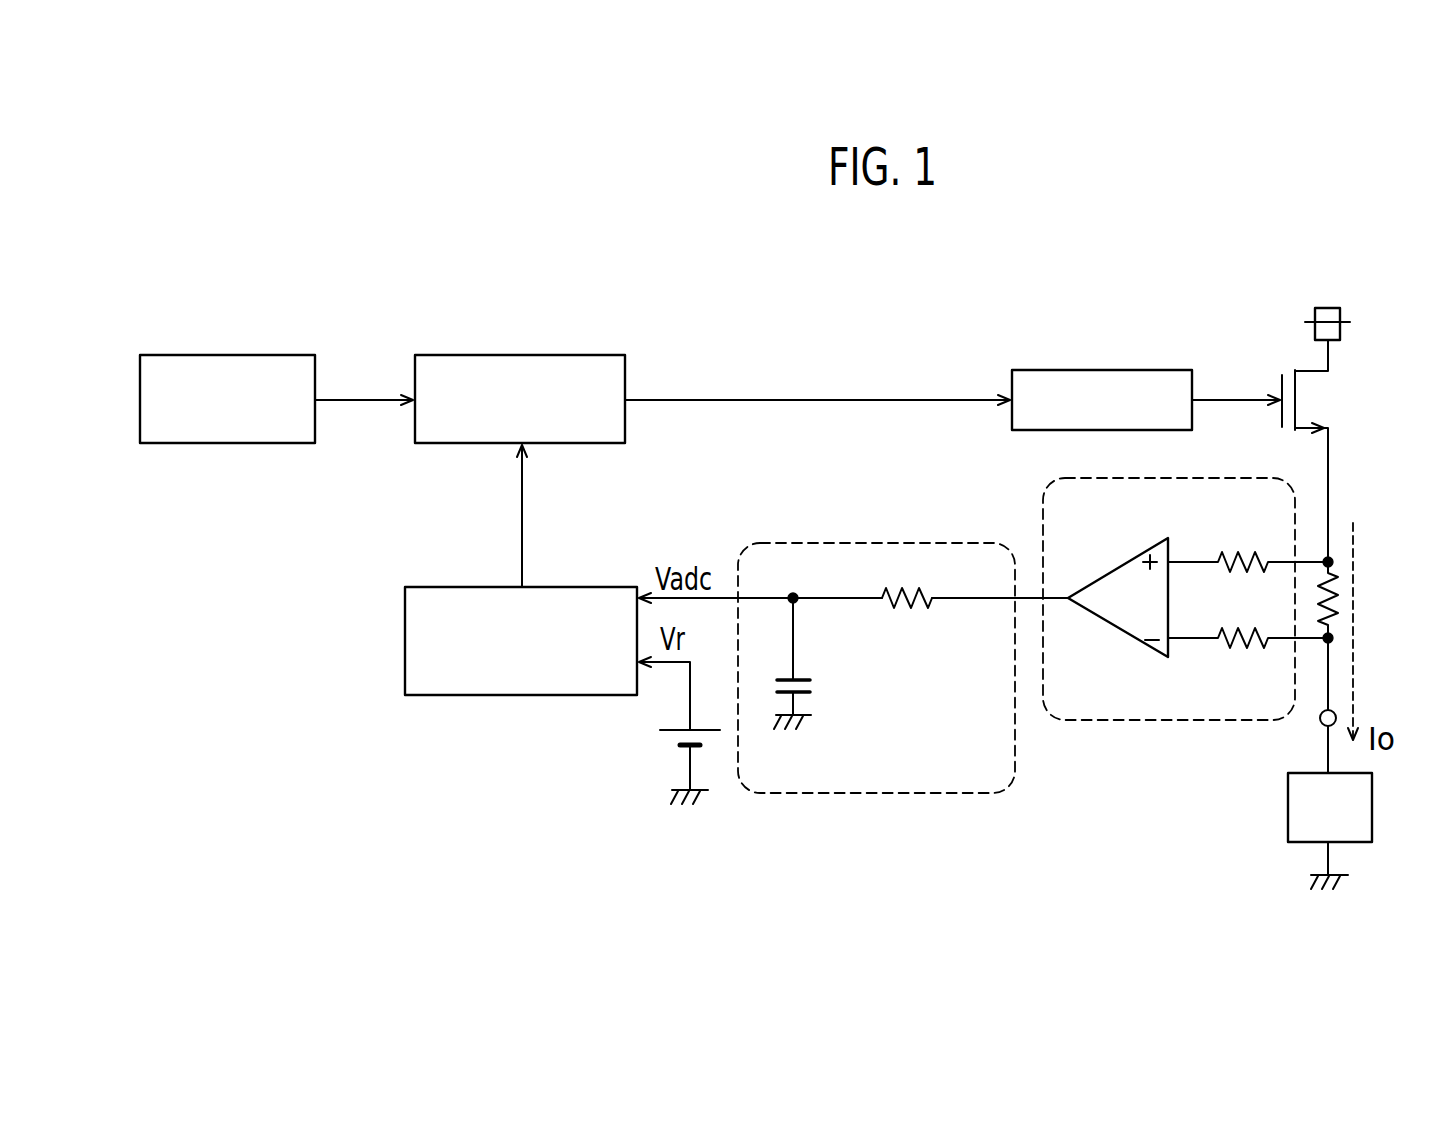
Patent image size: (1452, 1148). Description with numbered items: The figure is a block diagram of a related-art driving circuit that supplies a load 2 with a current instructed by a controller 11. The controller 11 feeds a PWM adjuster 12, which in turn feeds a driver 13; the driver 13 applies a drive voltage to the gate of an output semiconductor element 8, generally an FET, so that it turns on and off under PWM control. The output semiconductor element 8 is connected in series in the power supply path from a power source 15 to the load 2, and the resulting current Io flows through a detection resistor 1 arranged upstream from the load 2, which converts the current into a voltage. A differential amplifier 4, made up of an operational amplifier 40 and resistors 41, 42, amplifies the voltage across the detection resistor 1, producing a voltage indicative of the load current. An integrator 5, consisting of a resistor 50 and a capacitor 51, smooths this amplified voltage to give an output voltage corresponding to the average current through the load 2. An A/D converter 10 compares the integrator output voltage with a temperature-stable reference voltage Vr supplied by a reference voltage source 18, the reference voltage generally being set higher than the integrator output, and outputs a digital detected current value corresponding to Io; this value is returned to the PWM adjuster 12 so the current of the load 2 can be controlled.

The detection resistor 1 is at (1340, 602).
The load 2 is at (1372, 806).
The differential amplifier 4 is at (1133, 722).
The integrator 5 is at (865, 543).
The output semiconductor element 8 is at (1313, 400).
The A/D converter 10 is at (480, 587).
The controller 11 is at (255, 355).
The PWM adjuster 12 is at (523, 355).
The driver 13 is at (1105, 370).
The power source 15 is at (1342, 321).
The reference voltage source 18 is at (667, 744).
The operational amplifier 40 is at (1105, 572).
The resistor 41 is at (1243, 575).
The resistor 42 is at (1243, 652).
The resistor 50 is at (905, 612).
The capacitor 51 is at (812, 690).